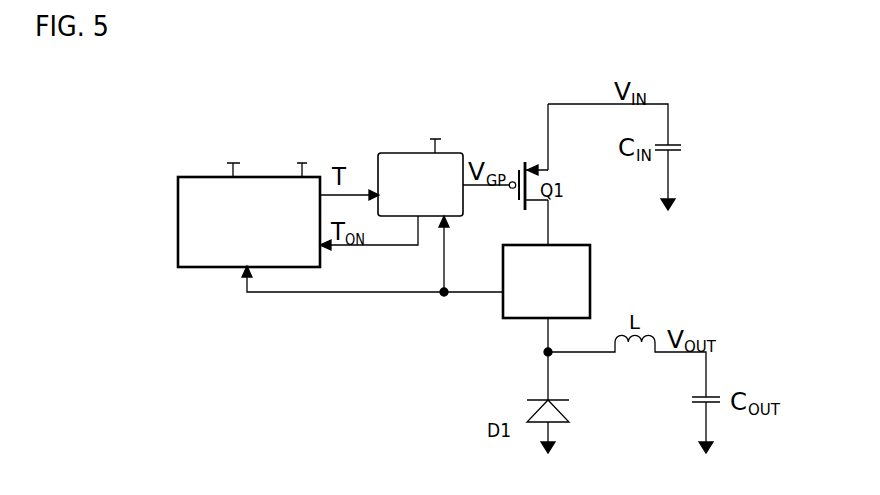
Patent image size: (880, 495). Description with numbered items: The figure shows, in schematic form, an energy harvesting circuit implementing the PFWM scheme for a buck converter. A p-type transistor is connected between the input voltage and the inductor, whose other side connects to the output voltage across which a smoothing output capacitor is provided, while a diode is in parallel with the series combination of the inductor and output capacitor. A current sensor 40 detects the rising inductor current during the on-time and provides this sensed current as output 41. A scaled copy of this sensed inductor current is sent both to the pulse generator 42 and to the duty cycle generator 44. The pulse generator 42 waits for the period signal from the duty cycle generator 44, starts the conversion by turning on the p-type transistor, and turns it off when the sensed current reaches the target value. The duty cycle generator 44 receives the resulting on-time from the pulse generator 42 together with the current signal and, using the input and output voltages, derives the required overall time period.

The current sensor 40 is at (593, 299).
The output 41 is at (483, 297).
The pulse generator 42 is at (395, 153).
The duty cycle generator 44 is at (194, 177).